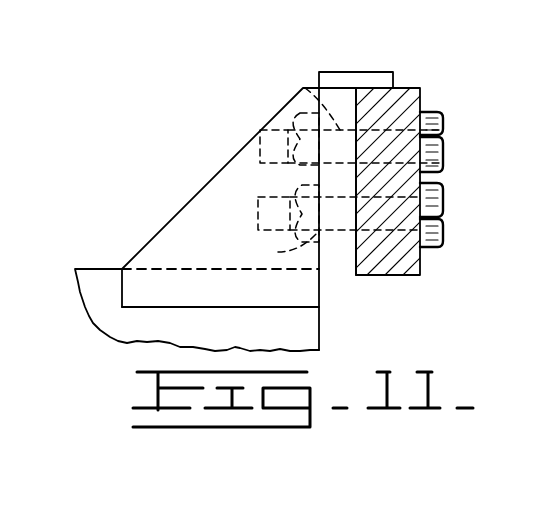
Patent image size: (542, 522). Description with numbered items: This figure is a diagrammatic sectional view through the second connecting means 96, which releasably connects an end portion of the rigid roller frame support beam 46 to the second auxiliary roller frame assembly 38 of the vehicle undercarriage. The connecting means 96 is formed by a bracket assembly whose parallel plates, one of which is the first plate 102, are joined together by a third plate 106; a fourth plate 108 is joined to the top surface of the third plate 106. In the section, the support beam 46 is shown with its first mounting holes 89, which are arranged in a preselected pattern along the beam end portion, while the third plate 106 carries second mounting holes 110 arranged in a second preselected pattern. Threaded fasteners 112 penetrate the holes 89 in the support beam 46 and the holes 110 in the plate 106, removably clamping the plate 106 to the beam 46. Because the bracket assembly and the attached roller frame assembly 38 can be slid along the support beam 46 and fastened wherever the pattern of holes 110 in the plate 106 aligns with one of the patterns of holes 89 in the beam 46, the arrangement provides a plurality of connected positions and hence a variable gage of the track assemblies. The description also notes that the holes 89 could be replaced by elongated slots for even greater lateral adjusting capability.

The second connecting means 96 is at (250, 128).
The first plate 102 is at (237, 227).
The second auxiliary roller frame assembly 38 is at (138, 338).
The third plate 106 is at (323, 242).
The fourth plate 108 is at (338, 72).
The rigid roller frame support beam 46 is at (420, 90).
The second mounting holes 110 is at (305, 88).
The threaded fasteners 112 is at (443, 133).
The first mounting holes 89 is at (443, 177).